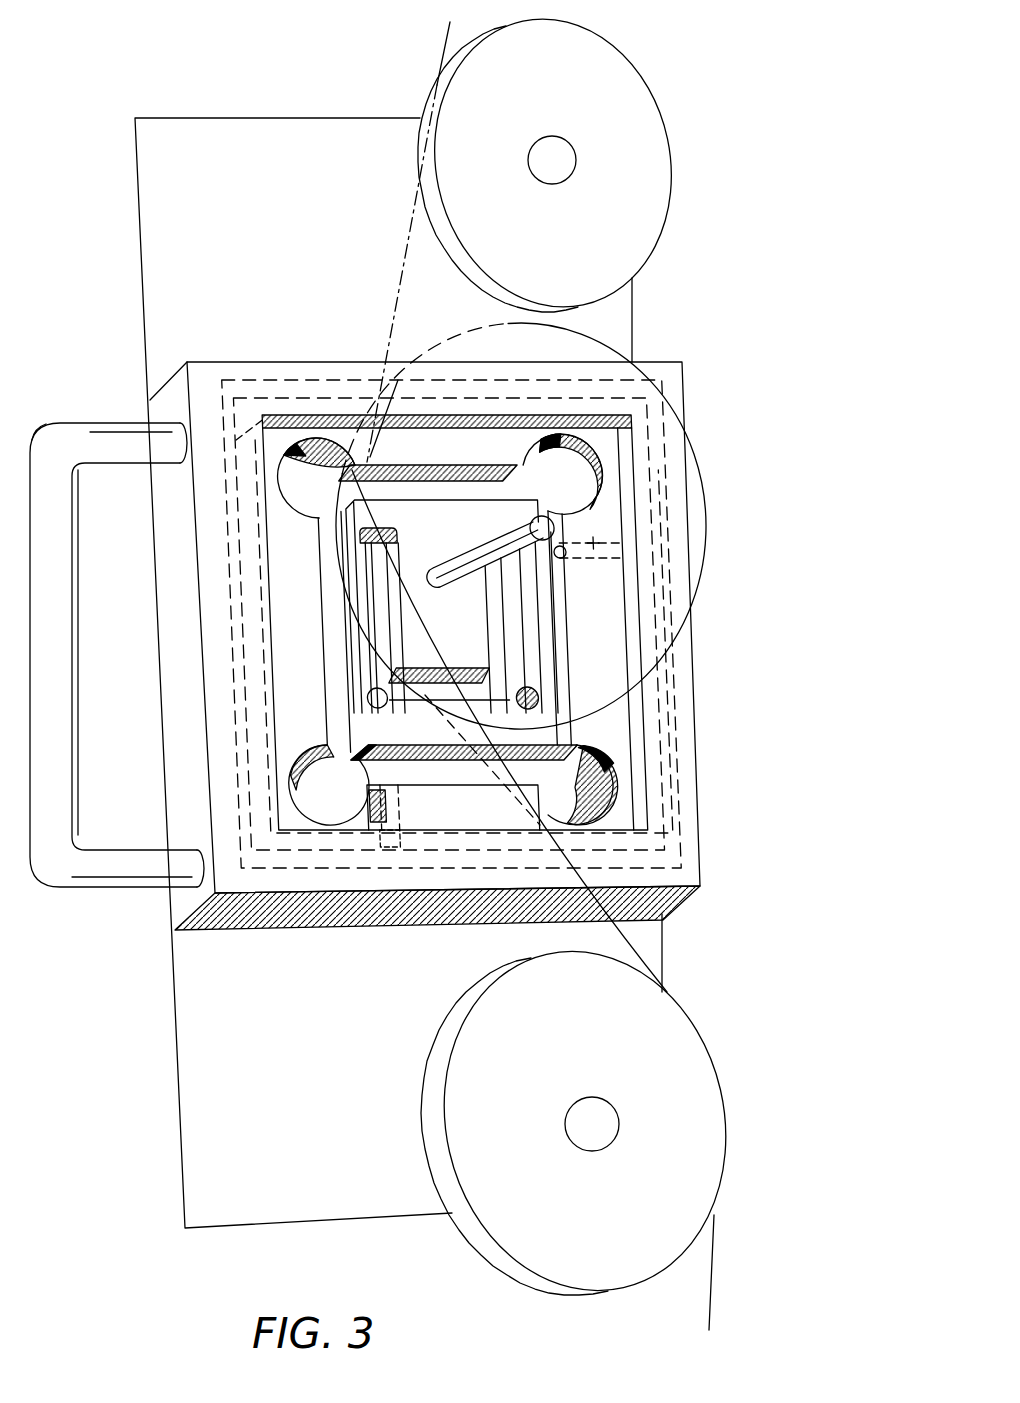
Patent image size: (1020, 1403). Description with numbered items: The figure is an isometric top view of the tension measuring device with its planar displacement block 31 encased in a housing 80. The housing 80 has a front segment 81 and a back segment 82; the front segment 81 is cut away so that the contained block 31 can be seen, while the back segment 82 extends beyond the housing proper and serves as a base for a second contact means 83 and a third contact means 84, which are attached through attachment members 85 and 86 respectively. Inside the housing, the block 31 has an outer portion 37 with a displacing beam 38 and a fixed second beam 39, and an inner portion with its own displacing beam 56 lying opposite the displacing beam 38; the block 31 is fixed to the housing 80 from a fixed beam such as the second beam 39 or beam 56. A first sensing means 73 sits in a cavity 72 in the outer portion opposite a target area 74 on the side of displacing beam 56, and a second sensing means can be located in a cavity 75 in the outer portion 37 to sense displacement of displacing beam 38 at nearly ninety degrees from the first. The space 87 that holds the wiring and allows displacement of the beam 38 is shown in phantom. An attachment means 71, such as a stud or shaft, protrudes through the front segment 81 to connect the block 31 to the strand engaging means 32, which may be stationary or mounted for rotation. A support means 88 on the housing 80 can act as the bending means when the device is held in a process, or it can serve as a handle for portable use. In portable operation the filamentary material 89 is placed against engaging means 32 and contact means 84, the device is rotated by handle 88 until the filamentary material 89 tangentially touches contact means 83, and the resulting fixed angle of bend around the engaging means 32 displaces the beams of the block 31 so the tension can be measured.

The block 31 is at (267, 840).
The engaging means 32 is at (603, 340).
The outer portion 37 is at (240, 604).
The displacing beam 38 is at (587, 652).
The second beam 39 is at (289, 649).
The displacing beam 56 is at (413, 517).
The attachment means 71 is at (484, 549).
The cavity 72 is at (589, 546).
The sensing means 73 is at (562, 559).
The target area 74 is at (390, 808).
The cavity 75 is at (388, 853).
The housing 80 is at (701, 783).
The front segment 81 is at (688, 706).
The back segment 82 is at (160, 353).
The contact means 83 is at (605, 205).
The contact means 84 is at (506, 1037).
The attachment member 85 is at (541, 174).
The attachment member 86 is at (579, 1138).
The space 87 is at (632, 466).
The support means 88 is at (97, 421).
The filamentary material 89 is at (447, 31).